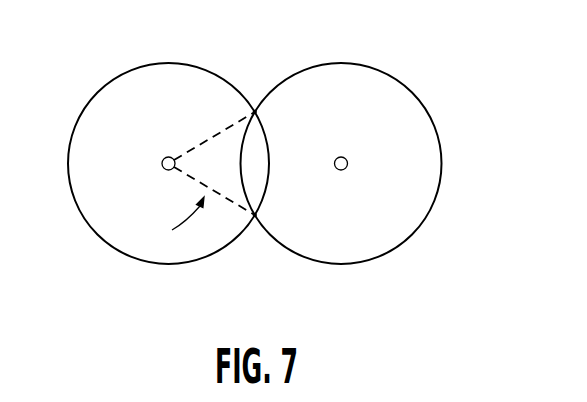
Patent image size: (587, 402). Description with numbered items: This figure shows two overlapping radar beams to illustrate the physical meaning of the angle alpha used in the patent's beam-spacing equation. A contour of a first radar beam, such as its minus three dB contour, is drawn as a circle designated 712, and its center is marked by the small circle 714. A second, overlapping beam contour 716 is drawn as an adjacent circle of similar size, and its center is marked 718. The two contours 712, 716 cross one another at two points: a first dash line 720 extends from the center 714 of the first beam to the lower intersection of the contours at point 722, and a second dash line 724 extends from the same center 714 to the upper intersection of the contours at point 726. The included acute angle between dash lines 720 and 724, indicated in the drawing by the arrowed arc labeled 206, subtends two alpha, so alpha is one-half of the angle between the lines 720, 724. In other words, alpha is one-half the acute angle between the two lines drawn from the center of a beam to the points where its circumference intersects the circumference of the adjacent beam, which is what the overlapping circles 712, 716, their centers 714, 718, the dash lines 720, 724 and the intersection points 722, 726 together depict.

The first radar beam contour 712 is at (85, 218).
The second overlapping beam contour 716 is at (407, 240).
The center of first beam 714 is at (162, 165).
The center of second beam 718 is at (348, 163).
The second dash line 724 is at (229, 122).
The first dash line 720 is at (224, 202).
The intersection point 726 is at (256, 111).
The intersection point 722 is at (256, 215).
The angle 206 is at (200, 122).